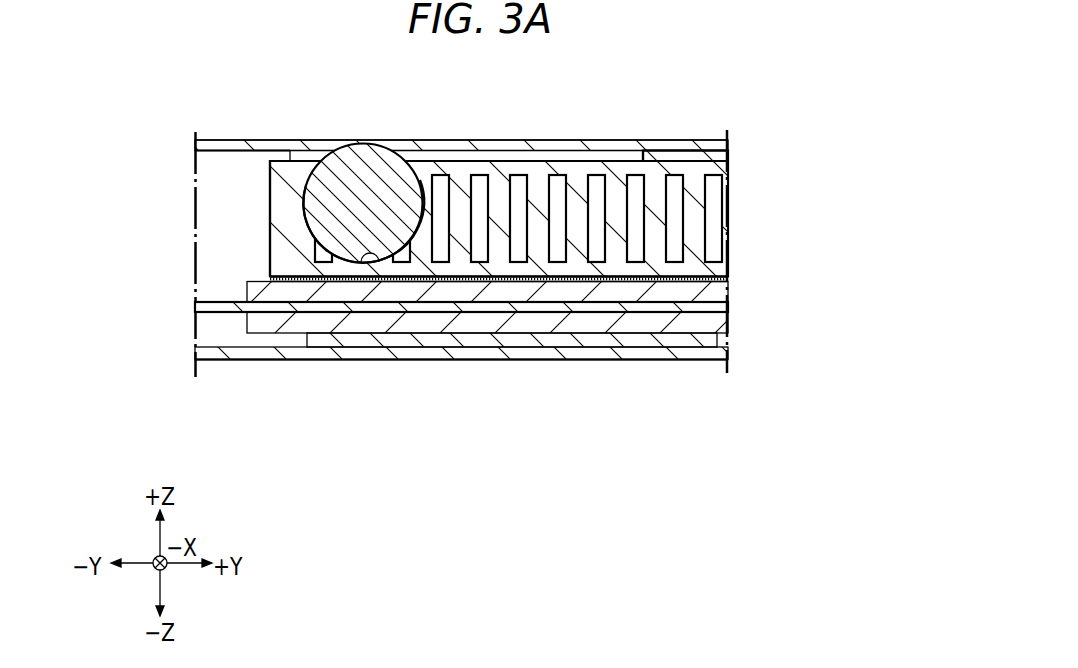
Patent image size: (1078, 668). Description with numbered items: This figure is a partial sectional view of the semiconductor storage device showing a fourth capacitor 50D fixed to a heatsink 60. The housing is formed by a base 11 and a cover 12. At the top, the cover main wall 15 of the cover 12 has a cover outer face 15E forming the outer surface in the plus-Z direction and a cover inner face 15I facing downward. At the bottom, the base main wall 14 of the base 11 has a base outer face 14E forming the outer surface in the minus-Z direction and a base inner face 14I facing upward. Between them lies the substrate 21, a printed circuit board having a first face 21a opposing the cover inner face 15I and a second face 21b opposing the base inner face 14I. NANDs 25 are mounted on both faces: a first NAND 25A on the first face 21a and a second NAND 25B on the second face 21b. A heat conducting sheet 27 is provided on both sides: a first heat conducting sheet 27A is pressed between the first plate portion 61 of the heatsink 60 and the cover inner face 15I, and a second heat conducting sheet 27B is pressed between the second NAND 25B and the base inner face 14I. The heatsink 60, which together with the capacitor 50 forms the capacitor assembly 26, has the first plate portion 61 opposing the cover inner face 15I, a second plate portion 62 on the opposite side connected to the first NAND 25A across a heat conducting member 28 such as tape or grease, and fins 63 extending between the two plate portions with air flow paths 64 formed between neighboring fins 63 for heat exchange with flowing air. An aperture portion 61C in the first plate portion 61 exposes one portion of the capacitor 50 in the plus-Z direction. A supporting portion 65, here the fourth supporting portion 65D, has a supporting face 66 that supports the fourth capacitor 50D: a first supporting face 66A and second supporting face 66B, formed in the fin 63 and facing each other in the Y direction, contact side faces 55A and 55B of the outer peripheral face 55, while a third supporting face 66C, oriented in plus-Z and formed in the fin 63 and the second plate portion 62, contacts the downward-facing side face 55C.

The base 11 is at (662, 360).
The cover 12 is at (218, 141).
The base main wall 14 is at (517, 360).
The base inner face 14I is at (700, 347).
The base outer face 14E is at (707, 360).
The cover main wall 15 is at (494, 240).
The cover inner face 15I is at (225, 151).
The cover outer face 15E is at (543, 140).
The substrate 21 is at (198, 308).
The first face 21a is at (222, 301).
The second face 21b is at (215, 313).
The NAND 25 is at (483, 344).
The first NAND 25A is at (252, 290).
The second NAND 25B is at (282, 333).
The capacitor assembly 26 is at (752, 172).
The heat conducting sheet 27 is at (529, 297).
The first heat conducting sheet 27A is at (633, 155).
The second heat conducting sheet 27B is at (403, 347).
The heat conducting member 28 is at (717, 278).
The capacitor 50 is at (365, 169).
The fourth capacitor 50D is at (366, 163).
The outer peripheral face 55 is at (310, 353).
The side face 55A is at (308, 222).
The side face 55B is at (420, 228).
The side face 55C is at (348, 258).
The heatsink 60 is at (285, 165).
The first plate portion 61 is at (460, 172).
The aperture portion 61C is at (336, 133).
The second plate portion 62 is at (672, 268).
The fin 63 is at (693, 192).
The air flow path 64 is at (480, 188).
The supporting portion 65 is at (183, 219).
The fourth supporting portion 65D is at (281, 211).
The supporting face 66 is at (373, 253).
The first supporting face 66A is at (305, 202).
The second supporting face 66B is at (420, 203).
The third supporting face 66C is at (378, 262).